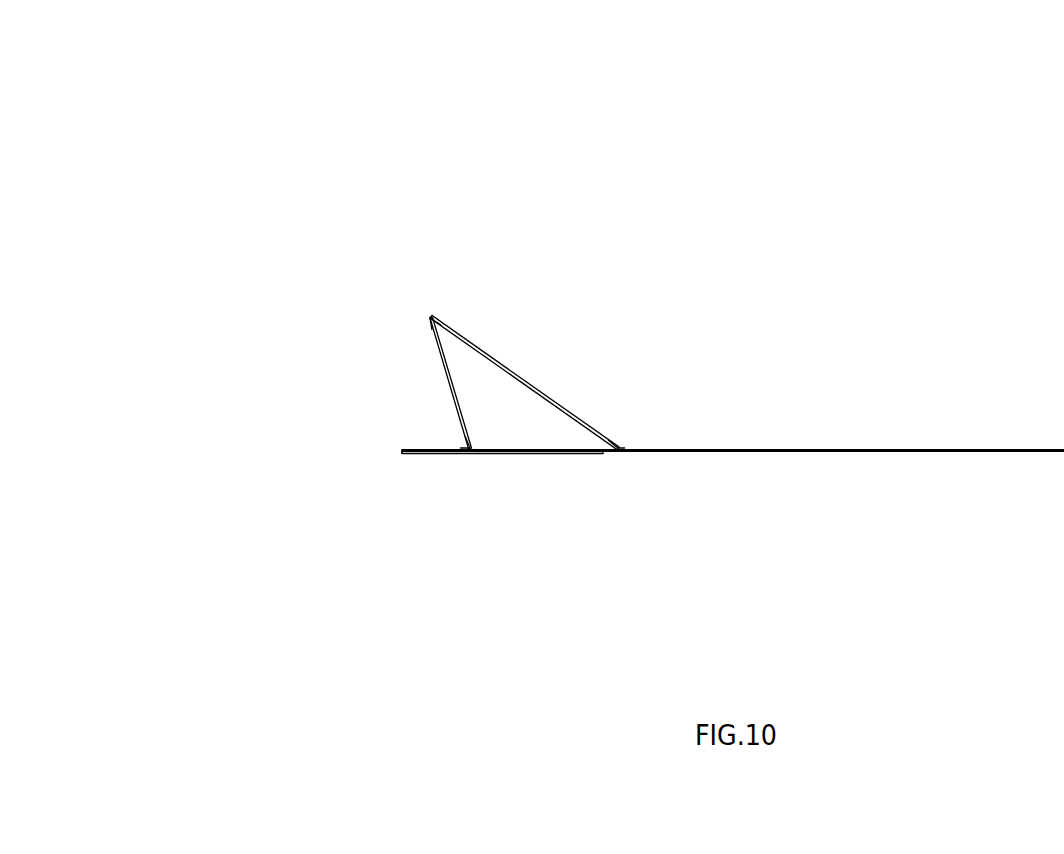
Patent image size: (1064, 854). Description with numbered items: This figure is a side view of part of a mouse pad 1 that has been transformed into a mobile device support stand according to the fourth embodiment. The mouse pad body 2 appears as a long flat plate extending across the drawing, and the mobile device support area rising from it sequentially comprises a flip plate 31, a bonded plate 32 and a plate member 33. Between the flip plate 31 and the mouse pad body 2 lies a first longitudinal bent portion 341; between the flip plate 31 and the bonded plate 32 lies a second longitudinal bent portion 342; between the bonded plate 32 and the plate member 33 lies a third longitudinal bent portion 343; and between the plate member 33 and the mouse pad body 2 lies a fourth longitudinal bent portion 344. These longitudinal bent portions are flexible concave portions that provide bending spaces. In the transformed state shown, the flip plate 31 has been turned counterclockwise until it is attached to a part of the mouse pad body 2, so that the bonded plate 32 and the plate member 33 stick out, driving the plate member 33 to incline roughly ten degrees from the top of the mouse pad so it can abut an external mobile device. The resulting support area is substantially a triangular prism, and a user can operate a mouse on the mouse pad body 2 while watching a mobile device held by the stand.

The display device 1 is at (217, 90).
The mouse pad body 2 is at (940, 387).
The flip plate 31 is at (557, 453).
The bonded plate 32 is at (437, 350).
The plate member 33 is at (523, 382).
The first longitudinal bent portion 341 is at (403, 455).
The second longitudinal bent portion 342 is at (465, 442).
The third longitudinal bent portion 343 is at (430, 318).
The fourth longitudinal bent portion 344 is at (618, 448).